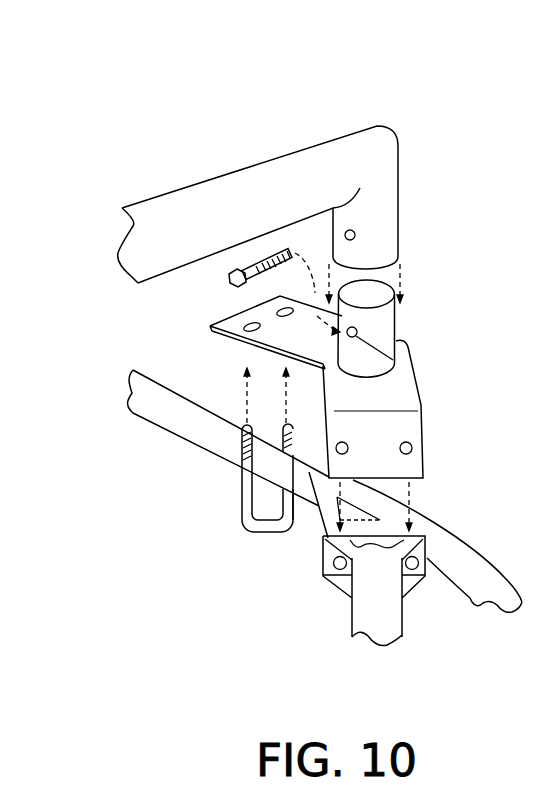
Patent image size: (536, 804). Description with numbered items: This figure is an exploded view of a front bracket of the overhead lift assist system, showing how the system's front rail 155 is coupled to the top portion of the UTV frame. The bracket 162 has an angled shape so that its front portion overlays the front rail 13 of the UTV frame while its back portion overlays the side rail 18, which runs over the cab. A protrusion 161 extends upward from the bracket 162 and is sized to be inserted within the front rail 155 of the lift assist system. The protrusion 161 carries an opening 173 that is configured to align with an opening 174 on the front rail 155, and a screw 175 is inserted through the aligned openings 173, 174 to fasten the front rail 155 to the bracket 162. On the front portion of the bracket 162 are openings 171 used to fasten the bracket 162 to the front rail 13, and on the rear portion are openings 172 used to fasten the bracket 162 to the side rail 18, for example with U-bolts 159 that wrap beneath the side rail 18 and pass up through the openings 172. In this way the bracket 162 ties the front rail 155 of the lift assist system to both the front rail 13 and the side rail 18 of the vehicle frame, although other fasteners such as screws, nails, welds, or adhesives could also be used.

The top rail 13 is at (382, 620).
The side rail 18 is at (180, 425).
The front rail 155 is at (241, 200).
The U-bolt 159 is at (240, 522).
The protrusion 161 is at (378, 323).
The bracket 162 is at (397, 394).
The openings 171 is at (348, 446).
The openings 172 is at (211, 329).
The opening 173 is at (406, 356).
The opening 174 is at (355, 231).
The screw 175 is at (229, 279).